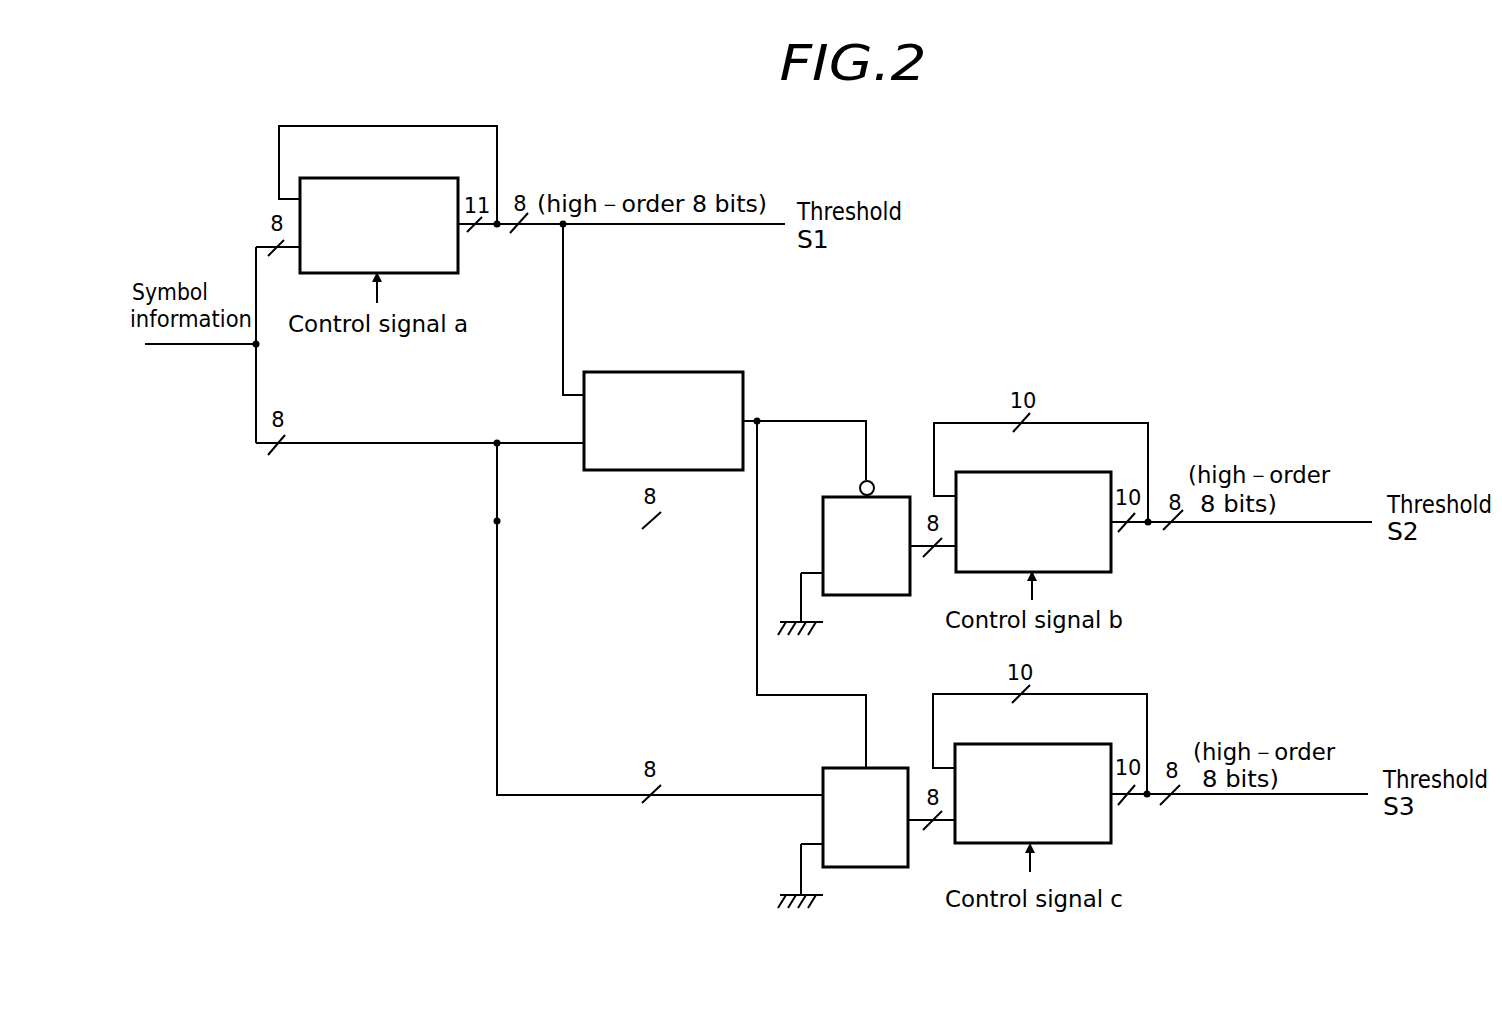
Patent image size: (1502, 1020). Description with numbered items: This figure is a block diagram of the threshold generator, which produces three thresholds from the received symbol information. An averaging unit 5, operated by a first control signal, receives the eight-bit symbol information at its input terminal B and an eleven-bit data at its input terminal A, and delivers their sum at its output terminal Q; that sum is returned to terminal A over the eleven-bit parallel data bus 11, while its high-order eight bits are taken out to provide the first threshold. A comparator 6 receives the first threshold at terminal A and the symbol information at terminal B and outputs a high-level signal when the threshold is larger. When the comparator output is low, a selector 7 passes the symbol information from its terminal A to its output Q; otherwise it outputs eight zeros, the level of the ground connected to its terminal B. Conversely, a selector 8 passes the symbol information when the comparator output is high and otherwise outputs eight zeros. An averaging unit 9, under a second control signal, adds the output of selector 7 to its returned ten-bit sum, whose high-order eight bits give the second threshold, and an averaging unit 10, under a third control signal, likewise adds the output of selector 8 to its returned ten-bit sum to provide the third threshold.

The averaging unit 5 is at (400, 178).
The comparator 6 is at (703, 372).
The selector 7 is at (860, 596).
The selector 8 is at (865, 867).
The averaging unit 9 is at (1060, 472).
The averaging unit 10 is at (1062, 744).
The 11-bit feedback bus 11 is at (378, 134).